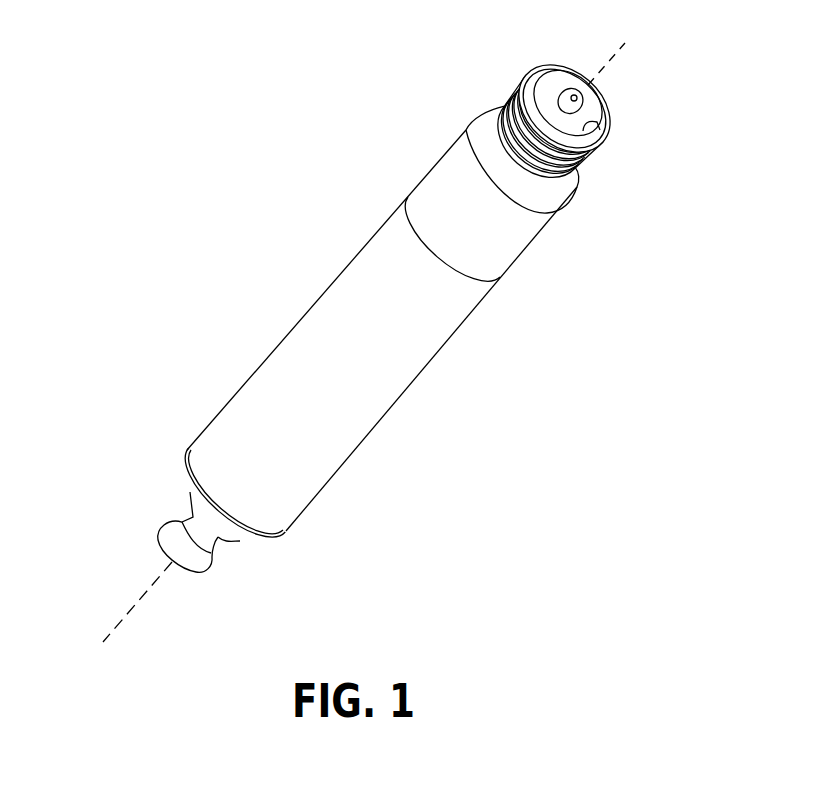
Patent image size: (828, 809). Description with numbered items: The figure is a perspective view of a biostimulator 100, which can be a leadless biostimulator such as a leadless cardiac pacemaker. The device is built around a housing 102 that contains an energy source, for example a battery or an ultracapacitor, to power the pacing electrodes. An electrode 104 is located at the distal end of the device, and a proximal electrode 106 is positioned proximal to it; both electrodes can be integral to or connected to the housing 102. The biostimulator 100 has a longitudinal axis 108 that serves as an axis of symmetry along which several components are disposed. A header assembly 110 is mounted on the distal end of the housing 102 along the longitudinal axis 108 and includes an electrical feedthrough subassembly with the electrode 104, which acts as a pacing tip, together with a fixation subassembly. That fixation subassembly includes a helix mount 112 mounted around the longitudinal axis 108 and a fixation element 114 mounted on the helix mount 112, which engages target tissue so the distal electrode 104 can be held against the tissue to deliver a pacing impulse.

The biostimulator 100 is at (213, 345).
The housing 102 is at (430, 183).
The electrode 104 is at (572, 93).
The proximal electrode 106 is at (394, 390).
The longitudinal axis 108 is at (622, 46).
The header assembly 110 is at (501, 97).
The helix mount 112 is at (606, 125).
The fixation element 114 is at (609, 112).